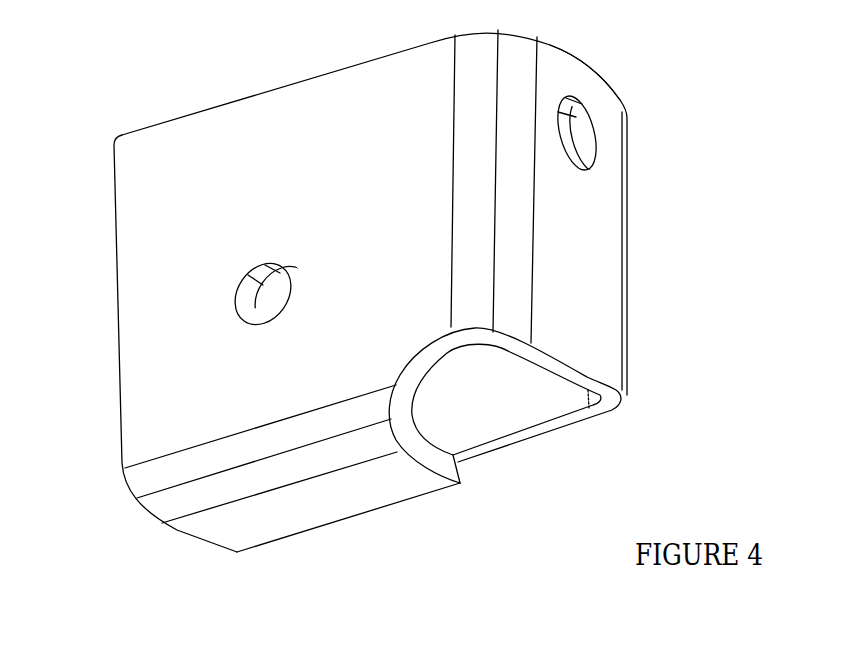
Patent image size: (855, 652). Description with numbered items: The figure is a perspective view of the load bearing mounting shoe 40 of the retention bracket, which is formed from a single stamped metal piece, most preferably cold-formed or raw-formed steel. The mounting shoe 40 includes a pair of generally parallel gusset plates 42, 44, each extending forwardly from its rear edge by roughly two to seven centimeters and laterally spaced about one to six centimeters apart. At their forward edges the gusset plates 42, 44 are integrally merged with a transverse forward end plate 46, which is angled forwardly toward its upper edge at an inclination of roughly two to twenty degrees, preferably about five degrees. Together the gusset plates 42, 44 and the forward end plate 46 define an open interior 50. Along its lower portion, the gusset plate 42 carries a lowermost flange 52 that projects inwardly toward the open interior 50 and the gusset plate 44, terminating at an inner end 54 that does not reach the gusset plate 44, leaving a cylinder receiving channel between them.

The load bearing mounting shoe 40 is at (635, 178).
The gusset plate 42 is at (177, 342).
The gusset plate 44 is at (570, 395).
The transverse forward end plate 46 is at (572, 317).
The open interior 50 is at (505, 407).
The lowermost flange 52 is at (323, 488).
The inner end 54 is at (423, 495).